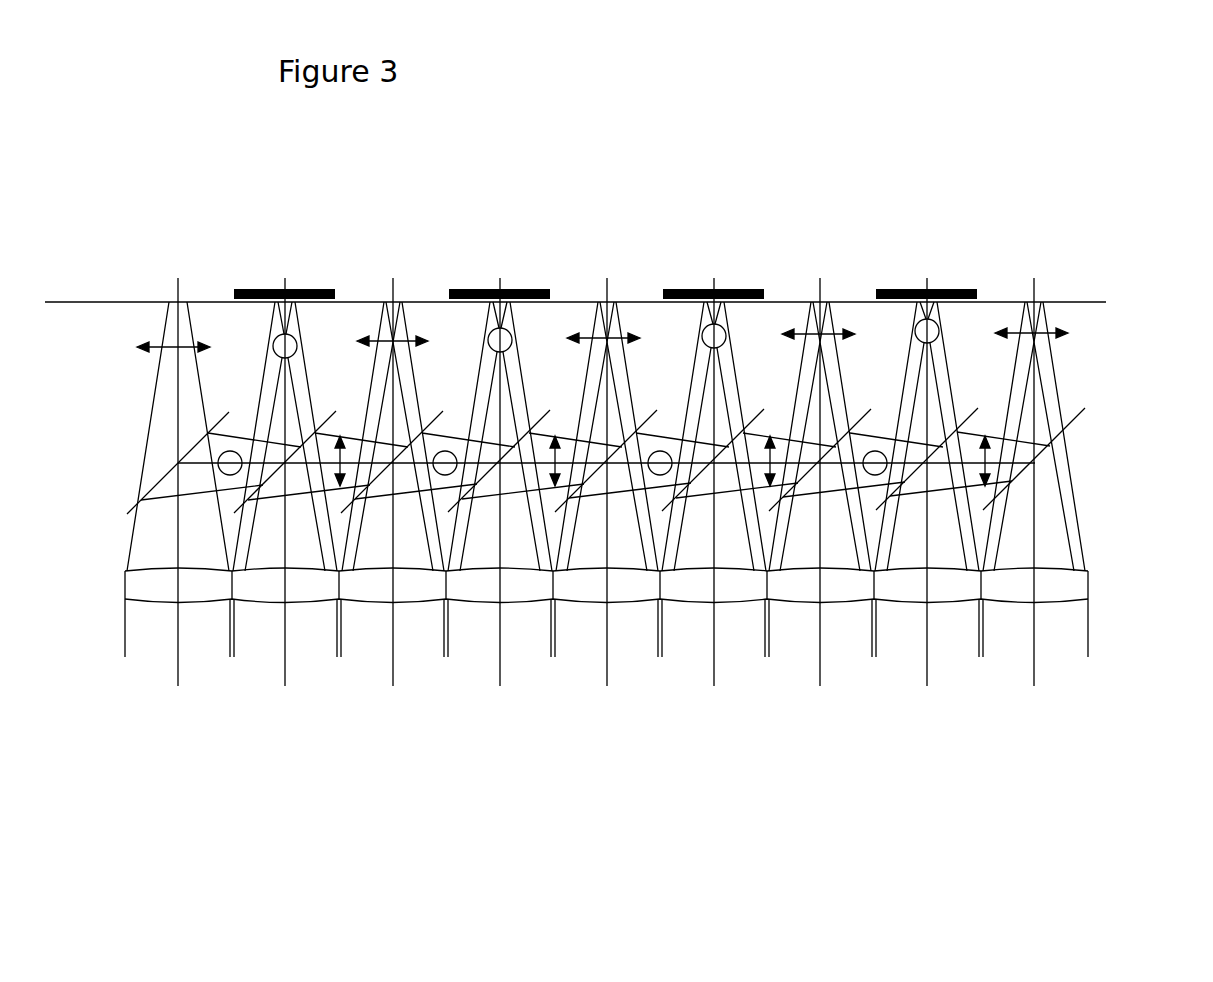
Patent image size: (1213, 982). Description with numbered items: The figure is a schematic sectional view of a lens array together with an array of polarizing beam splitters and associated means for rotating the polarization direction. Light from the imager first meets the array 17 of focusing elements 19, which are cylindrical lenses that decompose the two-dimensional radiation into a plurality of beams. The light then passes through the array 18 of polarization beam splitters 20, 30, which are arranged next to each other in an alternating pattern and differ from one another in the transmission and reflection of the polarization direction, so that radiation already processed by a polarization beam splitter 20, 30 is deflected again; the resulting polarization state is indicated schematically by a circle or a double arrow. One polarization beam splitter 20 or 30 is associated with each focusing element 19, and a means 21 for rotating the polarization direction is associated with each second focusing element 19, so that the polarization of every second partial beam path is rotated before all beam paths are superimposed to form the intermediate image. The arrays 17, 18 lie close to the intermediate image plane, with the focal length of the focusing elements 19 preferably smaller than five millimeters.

The array of focusing elements 17 is at (1113, 560).
The array of polarization beam splitters 18 is at (1098, 283).
The focusing element 19 is at (1006, 592).
The polarization beam splitter 20 is at (1062, 409).
The means for rotating the polarization direction 21 is at (852, 288).
The polarization beam splitter 30 is at (894, 514).